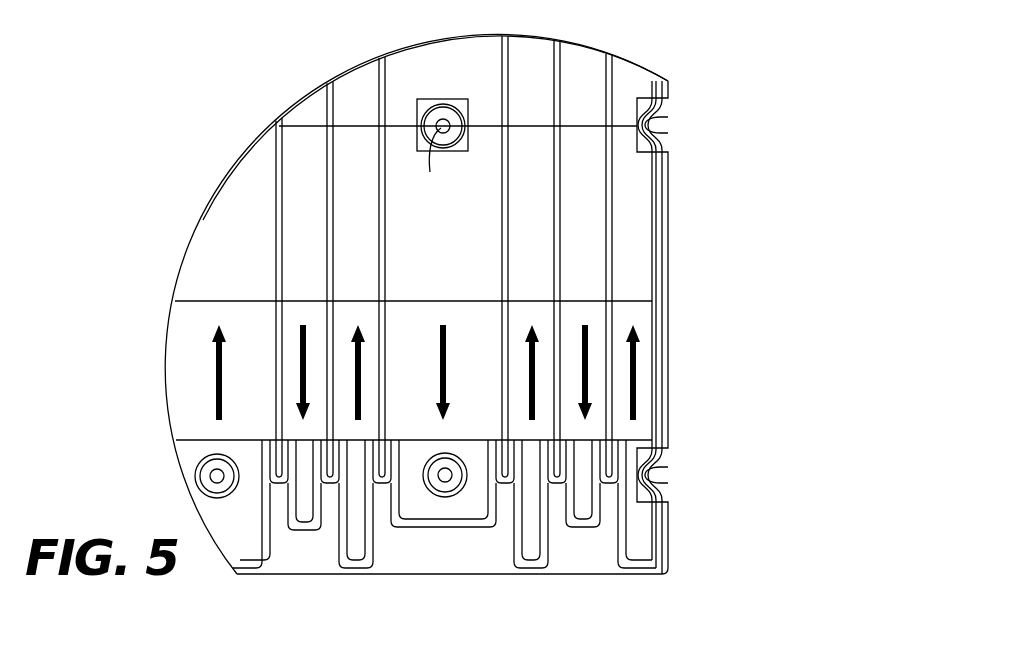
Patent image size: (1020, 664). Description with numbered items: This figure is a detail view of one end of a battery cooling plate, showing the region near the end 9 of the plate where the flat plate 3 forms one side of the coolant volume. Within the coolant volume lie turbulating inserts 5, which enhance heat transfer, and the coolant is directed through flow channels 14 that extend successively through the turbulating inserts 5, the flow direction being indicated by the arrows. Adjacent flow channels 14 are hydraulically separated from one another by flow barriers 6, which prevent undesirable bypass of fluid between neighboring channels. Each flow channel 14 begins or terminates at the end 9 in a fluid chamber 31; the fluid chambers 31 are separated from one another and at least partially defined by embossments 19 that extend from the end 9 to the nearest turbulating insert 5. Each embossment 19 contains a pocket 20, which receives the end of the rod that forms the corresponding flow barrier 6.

The flat plate 3 is at (671, 365).
The turbulating insert 5 is at (637, 250).
The flow barrier 6 is at (380, 155).
The end of the battery cooling plate 9 is at (685, 573).
The flow channel 14 is at (417, 43).
The embossment 19 is at (330, 490).
The pocket 20 is at (273, 455).
The fluid chamber 31 is at (248, 543).